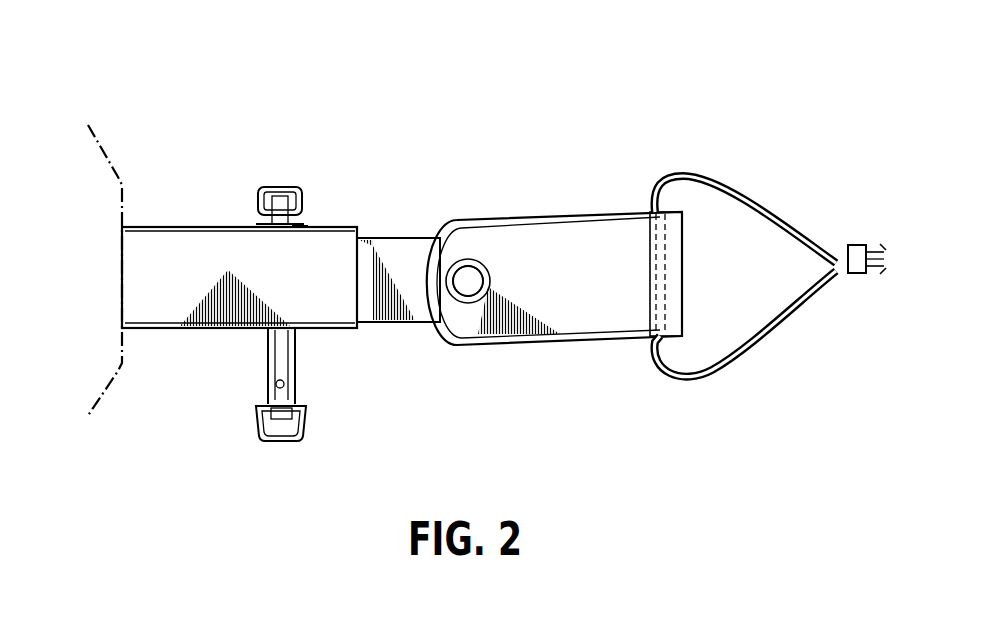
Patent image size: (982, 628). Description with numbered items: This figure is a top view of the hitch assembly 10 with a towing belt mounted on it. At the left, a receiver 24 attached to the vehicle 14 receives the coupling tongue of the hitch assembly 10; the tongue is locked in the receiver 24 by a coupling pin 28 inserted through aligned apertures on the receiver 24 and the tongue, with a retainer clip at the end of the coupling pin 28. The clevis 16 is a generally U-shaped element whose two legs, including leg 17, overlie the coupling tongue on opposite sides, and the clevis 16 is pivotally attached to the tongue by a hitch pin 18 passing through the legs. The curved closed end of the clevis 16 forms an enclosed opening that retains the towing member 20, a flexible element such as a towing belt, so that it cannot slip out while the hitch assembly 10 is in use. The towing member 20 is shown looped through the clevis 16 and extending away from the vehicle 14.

The hitch assembly 10 is at (238, 156).
The vehicle 14 is at (91, 291).
The clevis 16 is at (575, 215).
The leg 17 is at (596, 300).
The hitch pin 18 is at (466, 292).
The towing member 20 is at (695, 176).
The receiver 24 is at (323, 308).
The coupling pin 28 is at (290, 196).